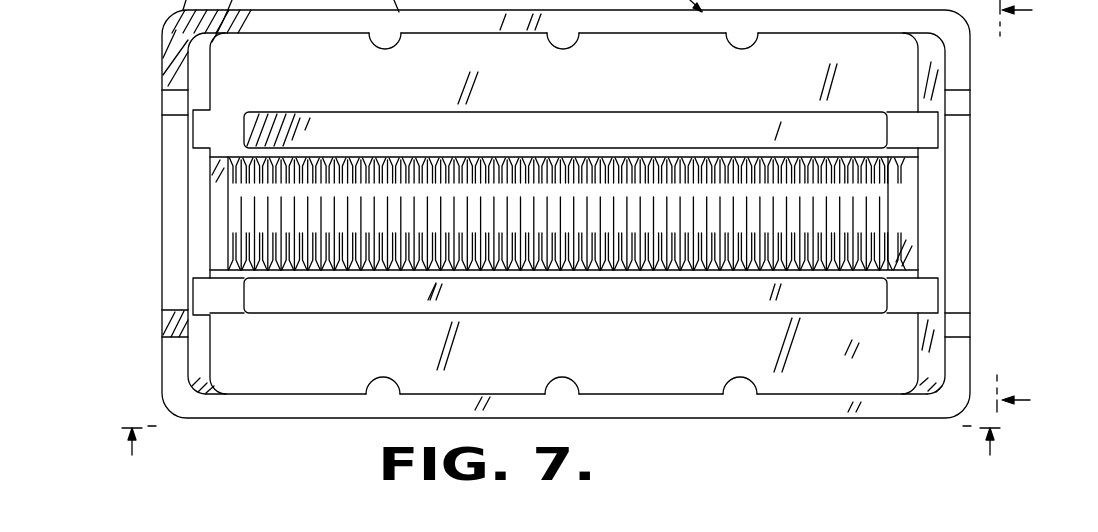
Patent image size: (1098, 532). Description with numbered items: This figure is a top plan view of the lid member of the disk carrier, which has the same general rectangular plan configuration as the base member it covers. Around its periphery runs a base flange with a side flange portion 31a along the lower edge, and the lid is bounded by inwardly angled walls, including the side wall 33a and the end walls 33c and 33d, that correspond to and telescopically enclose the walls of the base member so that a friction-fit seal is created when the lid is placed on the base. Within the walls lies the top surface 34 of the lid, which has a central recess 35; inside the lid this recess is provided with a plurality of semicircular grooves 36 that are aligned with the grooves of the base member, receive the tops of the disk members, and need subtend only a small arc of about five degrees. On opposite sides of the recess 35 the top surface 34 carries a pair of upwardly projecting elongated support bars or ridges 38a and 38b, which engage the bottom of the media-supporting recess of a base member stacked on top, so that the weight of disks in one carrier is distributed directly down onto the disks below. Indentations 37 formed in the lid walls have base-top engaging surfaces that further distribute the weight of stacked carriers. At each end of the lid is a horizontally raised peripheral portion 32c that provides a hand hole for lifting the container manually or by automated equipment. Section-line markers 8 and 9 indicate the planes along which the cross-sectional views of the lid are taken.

The section line 8- 8 is at (561, 445).
The section line 9- 9 is at (1014, 206).
The side flange portion 31a is at (367, 410).
The horizontally raised peripheral portion 32c is at (165, 174).
The side wall 33a is at (781, 395).
The end wall 33c is at (190, 383).
The end wall 33d is at (945, 80).
The top surface 34 is at (836, 365).
The central recess 35 is at (889, 238).
The semicircular grooves 36 is at (725, 160).
The indentations 37 is at (572, 378).
The support bar or ridge 38a is at (533, 313).
The support bar or ridge 38b is at (612, 116).